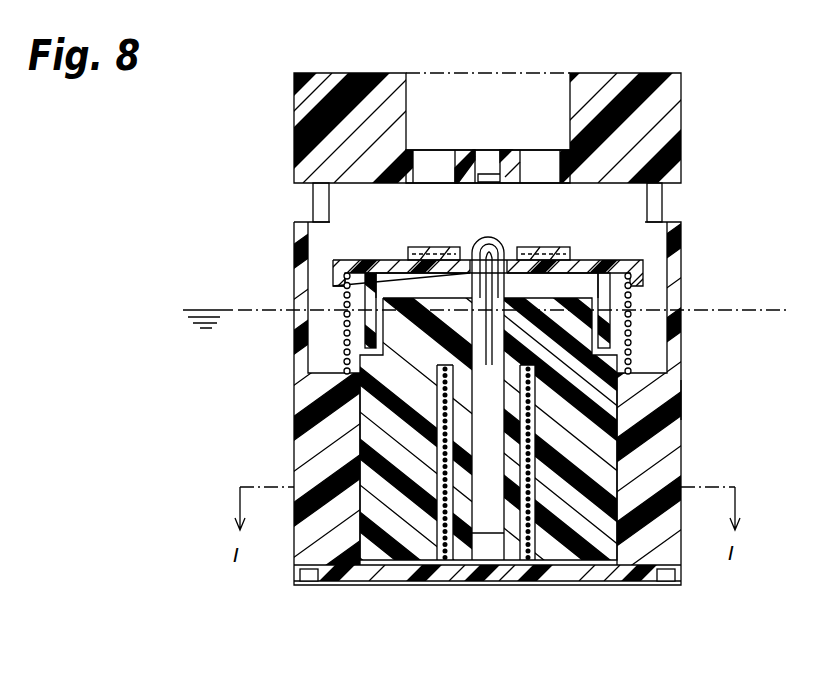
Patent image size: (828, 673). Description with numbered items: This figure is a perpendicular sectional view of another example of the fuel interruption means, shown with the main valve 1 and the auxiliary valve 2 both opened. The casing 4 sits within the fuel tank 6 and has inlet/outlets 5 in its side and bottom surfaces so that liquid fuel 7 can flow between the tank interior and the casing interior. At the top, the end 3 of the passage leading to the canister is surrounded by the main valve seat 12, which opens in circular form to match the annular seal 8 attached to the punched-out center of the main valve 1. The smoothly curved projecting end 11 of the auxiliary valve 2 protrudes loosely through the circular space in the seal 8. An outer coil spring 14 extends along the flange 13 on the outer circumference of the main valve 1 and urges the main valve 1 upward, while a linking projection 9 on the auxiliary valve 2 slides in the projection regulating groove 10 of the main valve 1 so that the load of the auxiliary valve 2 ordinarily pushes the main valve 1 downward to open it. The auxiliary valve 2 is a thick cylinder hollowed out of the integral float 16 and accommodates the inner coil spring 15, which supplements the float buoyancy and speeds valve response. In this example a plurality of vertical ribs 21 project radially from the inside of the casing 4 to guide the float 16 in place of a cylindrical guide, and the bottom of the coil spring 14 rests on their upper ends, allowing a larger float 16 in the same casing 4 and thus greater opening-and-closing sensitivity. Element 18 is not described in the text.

The main valve 1 is at (642, 272).
The auxiliary valve 2 is at (455, 305).
The end of the passage leading to the canister 3 is at (423, 103).
The casing 4 is at (681, 400).
The inlet/outlets 5 is at (320, 200).
The fuel tank 6 is at (214, 142).
The liquid fuel 7 is at (205, 405).
The annular seal 8 is at (568, 250).
The linking projection 9 is at (347, 322).
The projection regulating groove 10 is at (347, 298).
The projecting end 11 is at (489, 235).
The main valve seat 12 is at (437, 180).
The flange 13 is at (334, 268).
The coil spring 14 is at (630, 338).
The coil spring 15 is at (526, 548).
The float 16 is at (570, 535).
The bracket 18 is at (505, 176).
The vertical ribs 21 is at (650, 445).